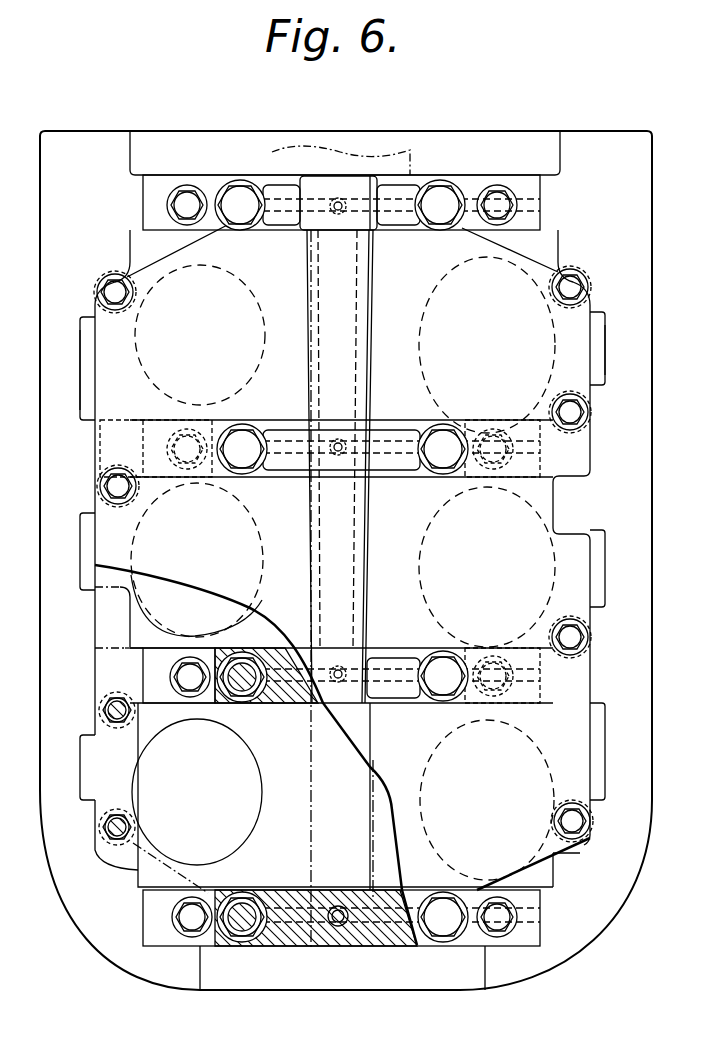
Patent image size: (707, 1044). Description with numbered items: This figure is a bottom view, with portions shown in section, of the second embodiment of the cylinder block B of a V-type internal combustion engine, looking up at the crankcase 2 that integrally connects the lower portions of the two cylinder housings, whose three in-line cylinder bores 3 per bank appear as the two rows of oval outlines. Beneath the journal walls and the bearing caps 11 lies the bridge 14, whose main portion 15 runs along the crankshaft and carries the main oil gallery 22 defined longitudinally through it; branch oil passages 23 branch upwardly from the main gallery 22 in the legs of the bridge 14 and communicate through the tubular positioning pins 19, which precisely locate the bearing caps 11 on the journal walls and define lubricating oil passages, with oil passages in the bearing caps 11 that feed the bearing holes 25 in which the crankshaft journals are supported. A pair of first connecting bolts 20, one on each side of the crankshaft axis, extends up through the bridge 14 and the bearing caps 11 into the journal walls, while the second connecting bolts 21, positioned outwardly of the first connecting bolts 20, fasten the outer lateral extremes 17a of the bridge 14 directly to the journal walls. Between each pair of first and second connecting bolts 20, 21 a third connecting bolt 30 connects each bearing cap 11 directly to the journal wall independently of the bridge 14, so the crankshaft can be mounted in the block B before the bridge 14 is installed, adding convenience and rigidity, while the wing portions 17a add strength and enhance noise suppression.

The crankcase 2 is at (592, 131).
The cylinder block B is at (496, 122).
The cylinder bores 3 is at (258, 290).
The bearing caps 11 is at (303, 705).
The bridge 14 is at (394, 169).
The main portion 15 is at (363, 340).
The outer lateral extremes 17a is at (88, 355).
The tubular positioning pins 19 is at (338, 905).
The first connecting bolts 20 is at (238, 215).
The second connecting bolts 21 is at (120, 292).
The main oil gallery 22 is at (352, 566).
The branch oil passages 23 is at (338, 439).
The bearing holes 25 is at (272, 178).
The third connecting bolts 30 is at (186, 202).